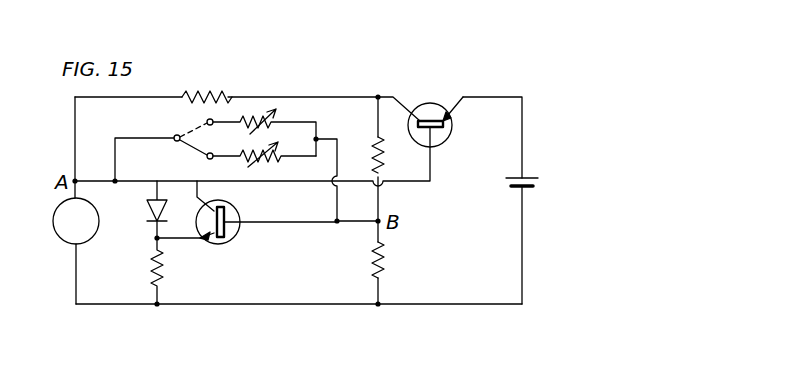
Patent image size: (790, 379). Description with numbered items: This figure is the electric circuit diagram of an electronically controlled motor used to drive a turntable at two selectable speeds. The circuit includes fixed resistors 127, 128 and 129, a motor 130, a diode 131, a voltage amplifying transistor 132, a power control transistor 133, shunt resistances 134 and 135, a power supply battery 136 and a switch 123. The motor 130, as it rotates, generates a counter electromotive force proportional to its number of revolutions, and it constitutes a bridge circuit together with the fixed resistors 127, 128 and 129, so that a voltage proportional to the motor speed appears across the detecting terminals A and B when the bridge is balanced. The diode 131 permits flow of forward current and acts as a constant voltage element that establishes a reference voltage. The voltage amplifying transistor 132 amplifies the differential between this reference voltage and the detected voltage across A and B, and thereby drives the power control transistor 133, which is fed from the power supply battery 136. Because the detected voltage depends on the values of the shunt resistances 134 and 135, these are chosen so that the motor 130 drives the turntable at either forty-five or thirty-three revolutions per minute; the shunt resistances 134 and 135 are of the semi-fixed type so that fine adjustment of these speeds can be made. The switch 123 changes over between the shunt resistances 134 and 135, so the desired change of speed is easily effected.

The switch 123 is at (197, 154).
The fixed resistor 127 is at (205, 97).
The fixed resistor 128 is at (386, 252).
The fixed resistor 129 is at (374, 147).
The motor 130 is at (82, 245).
The diode 131 is at (150, 212).
The voltage amplifying transistor 132 is at (233, 242).
The power control transistor 133 is at (430, 103).
The shunt resistance 134 is at (256, 116).
The shunt resistance 135 is at (273, 161).
The power supply battery 136 is at (512, 186).